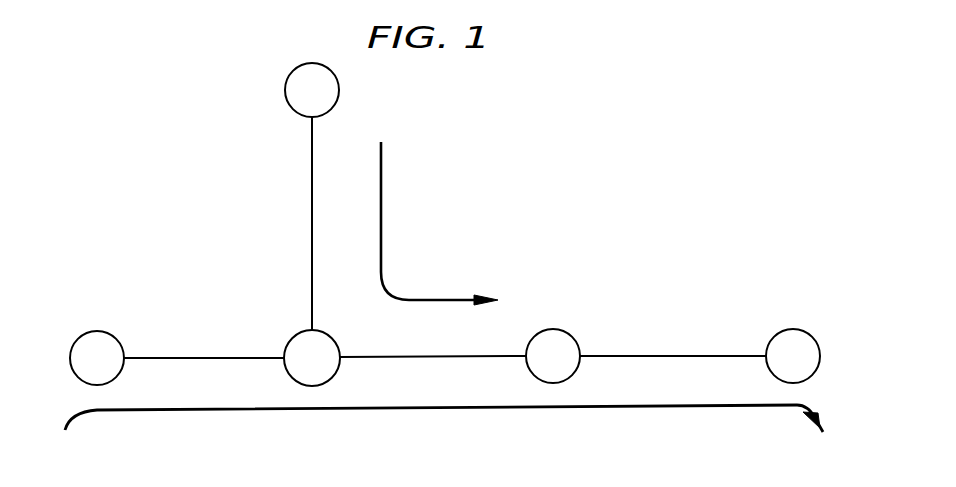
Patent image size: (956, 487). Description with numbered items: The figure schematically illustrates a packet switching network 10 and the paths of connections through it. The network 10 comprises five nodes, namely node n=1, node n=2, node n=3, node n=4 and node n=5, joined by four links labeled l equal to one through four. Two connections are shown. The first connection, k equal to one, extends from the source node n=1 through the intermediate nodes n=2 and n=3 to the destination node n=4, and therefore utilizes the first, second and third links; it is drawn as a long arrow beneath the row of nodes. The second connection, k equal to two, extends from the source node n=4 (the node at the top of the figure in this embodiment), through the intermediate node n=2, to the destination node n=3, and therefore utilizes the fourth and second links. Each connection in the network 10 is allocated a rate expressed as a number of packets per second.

The packet switching network 10 is at (552, 162).
The node n= 1 is at (97, 358).
The node n= 2 is at (312, 358).
The node n= 3 is at (553, 356).
The node n= 4 is at (793, 356).
The node n= 5 is at (312, 90).